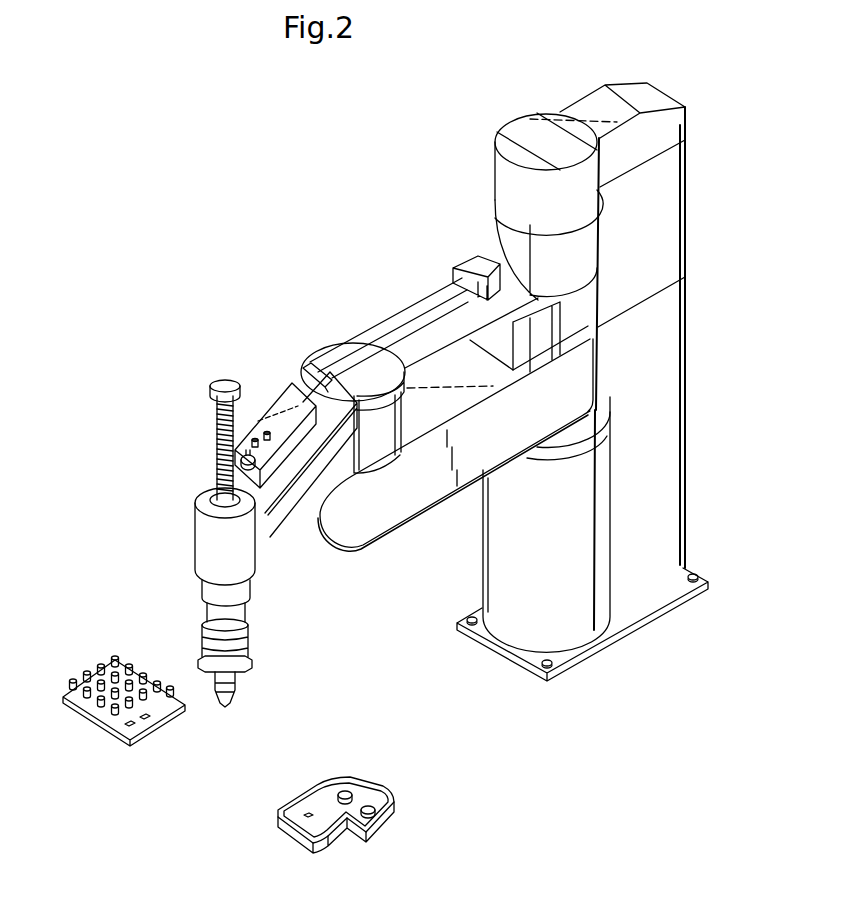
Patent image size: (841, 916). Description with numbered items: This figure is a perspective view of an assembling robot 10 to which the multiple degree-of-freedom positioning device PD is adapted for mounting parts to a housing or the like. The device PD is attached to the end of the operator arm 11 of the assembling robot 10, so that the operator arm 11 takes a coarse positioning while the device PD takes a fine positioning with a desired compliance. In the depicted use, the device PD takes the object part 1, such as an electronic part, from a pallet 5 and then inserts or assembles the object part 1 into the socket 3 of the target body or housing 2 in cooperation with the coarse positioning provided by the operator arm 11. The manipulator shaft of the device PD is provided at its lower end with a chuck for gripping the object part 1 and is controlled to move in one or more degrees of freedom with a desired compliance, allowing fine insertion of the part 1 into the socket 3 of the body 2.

The assembling robot 10 is at (667, 260).
The operator arm 11 is at (280, 407).
The positioning device PD is at (245, 648).
The object part 1 is at (117, 663).
The pallet 5 is at (90, 715).
The body 2 is at (297, 835).
The socket 3 is at (347, 790).